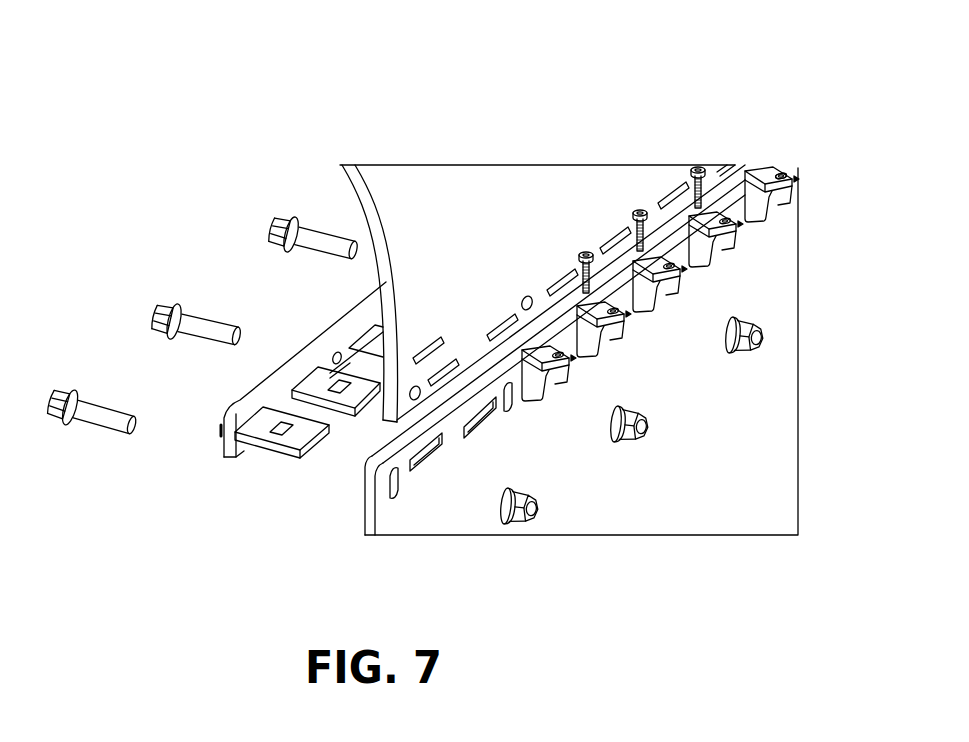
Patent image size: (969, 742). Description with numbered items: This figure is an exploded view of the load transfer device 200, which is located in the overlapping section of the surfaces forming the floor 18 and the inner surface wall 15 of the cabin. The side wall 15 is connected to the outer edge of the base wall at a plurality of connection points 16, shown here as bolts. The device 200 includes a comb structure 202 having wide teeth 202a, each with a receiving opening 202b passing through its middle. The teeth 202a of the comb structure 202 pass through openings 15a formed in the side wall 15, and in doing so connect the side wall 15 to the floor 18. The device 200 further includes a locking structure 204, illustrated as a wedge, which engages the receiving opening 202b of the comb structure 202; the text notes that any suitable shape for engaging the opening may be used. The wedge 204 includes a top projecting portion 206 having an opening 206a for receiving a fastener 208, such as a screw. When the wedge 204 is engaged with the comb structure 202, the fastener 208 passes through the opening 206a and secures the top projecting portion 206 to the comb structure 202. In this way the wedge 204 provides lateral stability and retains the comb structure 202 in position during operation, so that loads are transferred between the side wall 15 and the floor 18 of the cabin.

The inner surface wall 15 is at (347, 182).
The openings 15a is at (430, 470).
The connection points 16 is at (165, 306).
The floor 18 is at (476, 513).
The load transfer device 200 is at (588, 84).
The comb structure 202 is at (228, 453).
The teeth 202a is at (290, 447).
The receiving opening 202b is at (283, 428).
The locking structure 204 is at (758, 175).
The top projecting portion 206 is at (795, 183).
The opening 206a is at (781, 175).
The fastener 208 is at (643, 206).